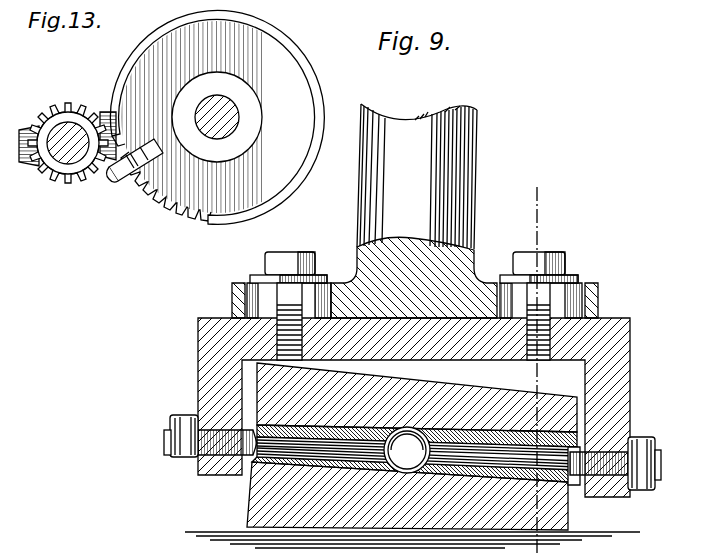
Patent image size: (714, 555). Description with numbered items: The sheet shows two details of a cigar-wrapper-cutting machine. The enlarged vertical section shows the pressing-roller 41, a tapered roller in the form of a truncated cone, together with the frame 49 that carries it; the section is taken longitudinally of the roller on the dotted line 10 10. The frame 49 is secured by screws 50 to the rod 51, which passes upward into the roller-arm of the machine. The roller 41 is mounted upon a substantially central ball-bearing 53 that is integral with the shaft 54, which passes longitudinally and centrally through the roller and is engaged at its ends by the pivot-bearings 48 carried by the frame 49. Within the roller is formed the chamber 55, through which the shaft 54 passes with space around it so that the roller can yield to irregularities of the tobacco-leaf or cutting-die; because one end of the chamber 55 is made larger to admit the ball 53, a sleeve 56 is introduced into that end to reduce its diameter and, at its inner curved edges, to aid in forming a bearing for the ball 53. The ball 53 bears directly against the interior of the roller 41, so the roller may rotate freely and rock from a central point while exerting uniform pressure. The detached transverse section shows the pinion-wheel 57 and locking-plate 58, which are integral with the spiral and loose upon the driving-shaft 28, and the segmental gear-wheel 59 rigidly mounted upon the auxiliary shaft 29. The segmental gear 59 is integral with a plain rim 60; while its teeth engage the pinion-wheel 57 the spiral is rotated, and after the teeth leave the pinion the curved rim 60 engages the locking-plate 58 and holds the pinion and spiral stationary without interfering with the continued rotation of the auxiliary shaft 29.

In FIG. 13, the pinion-wheel 57 is at (62, 104).
In FIG. 13, the locking-plate 58 is at (110, 112).
In FIG. 13, the driving-shaft 28 is at (70, 160).
In FIG. 13, the segmental gear-wheel 59 is at (139, 182).
In FIG. 13, the auxiliary shaft 29 is at (218, 105).
In FIG. 13, the plain rim 60 is at (320, 102).
In FIG. 9, the rod 51 is at (414, 211).
In FIG. 9, the section line 10 10 is at (538, 363).
In FIG. 9, the screws 50 is at (297, 253).
In FIG. 9, the frame 49 is at (631, 333).
In FIG. 9, the roller 41 is at (497, 395).
In FIG. 9, the pivot-bearings 48 is at (614, 443).
In FIG. 9, the shaft 54 is at (417, 453).
In FIG. 9, the ball-bearing 53 is at (407, 450).
In FIG. 9, the chamber 55 is at (359, 472).
In FIG. 9, the sleeve 56 is at (574, 488).